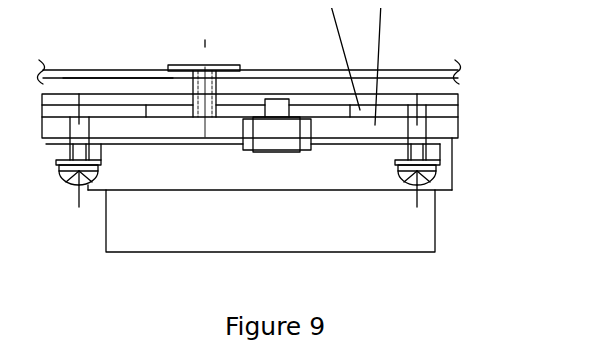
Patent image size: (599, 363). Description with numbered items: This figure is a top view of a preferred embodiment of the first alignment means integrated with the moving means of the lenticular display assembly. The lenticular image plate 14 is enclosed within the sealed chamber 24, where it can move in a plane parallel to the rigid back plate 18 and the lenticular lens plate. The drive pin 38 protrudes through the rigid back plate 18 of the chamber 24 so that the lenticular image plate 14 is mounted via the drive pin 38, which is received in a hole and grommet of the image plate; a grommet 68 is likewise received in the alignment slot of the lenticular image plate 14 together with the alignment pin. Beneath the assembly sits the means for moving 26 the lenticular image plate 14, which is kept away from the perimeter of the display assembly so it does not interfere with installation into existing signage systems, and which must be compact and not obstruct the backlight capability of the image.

The lenticular image plate 14 is at (55, 72).
The sealed chamber 24 is at (117, 82).
The rigid back plate 18 is at (445, 98).
The drive pin 38 is at (195, 90).
The grommet 68 is at (218, 62).
The means for moving 26 is at (378, 230).